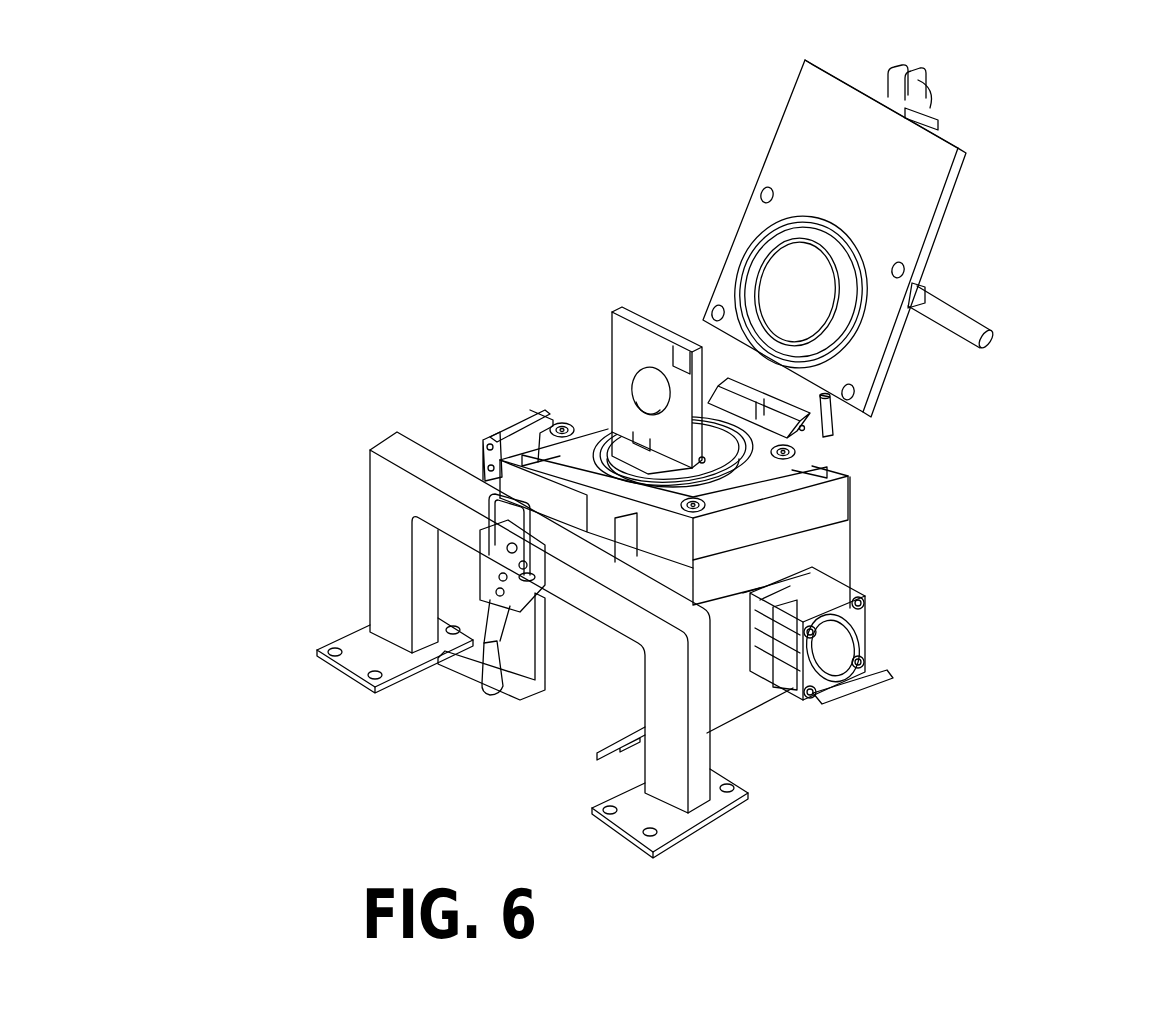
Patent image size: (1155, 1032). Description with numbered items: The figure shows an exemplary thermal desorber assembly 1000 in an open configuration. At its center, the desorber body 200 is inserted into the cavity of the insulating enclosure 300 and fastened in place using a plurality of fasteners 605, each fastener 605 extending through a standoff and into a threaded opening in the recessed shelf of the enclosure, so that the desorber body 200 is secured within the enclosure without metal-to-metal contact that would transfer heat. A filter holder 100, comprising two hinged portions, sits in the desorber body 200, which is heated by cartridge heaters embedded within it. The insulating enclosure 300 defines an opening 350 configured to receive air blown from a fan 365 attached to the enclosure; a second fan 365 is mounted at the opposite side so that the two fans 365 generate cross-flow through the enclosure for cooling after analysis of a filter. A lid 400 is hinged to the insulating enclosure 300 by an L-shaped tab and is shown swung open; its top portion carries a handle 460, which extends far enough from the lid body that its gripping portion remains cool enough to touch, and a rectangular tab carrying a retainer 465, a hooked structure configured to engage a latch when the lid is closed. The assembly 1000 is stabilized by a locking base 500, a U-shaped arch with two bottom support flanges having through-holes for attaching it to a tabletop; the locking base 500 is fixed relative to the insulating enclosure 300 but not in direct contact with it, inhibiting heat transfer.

The thermal desorber assembly 1000 is at (330, 77).
The filter holder 100 is at (627, 303).
The desorber body 200 is at (579, 407).
The insulating enclosure 300 is at (848, 518).
The opening 350 is at (759, 593).
The fan 365 is at (492, 425).
The lid 400 is at (962, 156).
The handle 460 is at (970, 318).
The retainer 465 is at (927, 81).
The locking base 500 is at (366, 567).
The fastener 605 is at (788, 453).